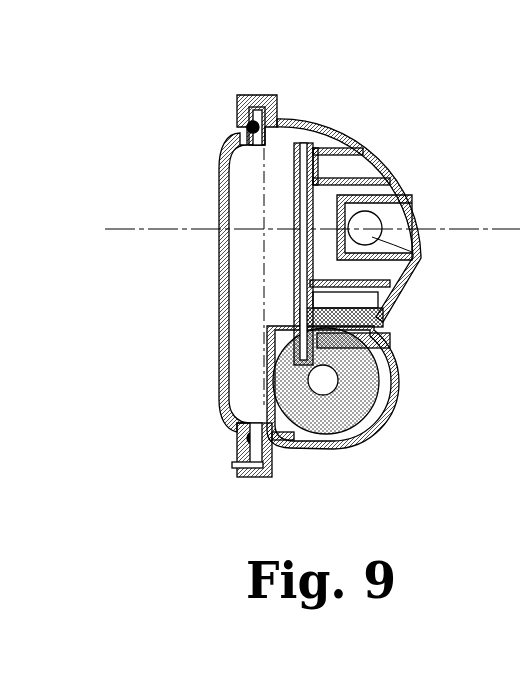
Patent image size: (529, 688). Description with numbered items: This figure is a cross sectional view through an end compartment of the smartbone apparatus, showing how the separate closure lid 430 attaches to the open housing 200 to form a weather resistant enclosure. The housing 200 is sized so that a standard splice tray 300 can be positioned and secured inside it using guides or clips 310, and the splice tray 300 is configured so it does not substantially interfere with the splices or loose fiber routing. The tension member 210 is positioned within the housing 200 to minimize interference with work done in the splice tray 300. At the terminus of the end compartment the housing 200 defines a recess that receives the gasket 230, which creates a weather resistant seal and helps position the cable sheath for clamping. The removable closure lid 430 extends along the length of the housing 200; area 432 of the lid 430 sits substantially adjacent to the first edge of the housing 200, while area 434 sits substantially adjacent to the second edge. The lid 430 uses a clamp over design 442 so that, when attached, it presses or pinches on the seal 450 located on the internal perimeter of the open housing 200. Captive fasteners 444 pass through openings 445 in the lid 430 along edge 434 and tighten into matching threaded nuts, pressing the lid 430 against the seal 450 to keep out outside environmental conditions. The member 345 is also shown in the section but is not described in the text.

The housing 200 is at (398, 386).
The tension member 210 is at (413, 254).
The gasket 230 is at (368, 425).
The splice tray 300 is at (313, 146).
The guides or clips 310 is at (350, 157).
The drive shaft 345 is at (270, 410).
The closure lid 430 is at (218, 282).
The area adjacent first edge 432 is at (222, 92).
The area adjacent second edge 434 is at (213, 470).
The clamp over design 442 is at (257, 94).
The fasteners 444 is at (260, 469).
The openings 445 is at (238, 457).
The seal 450 is at (246, 126).